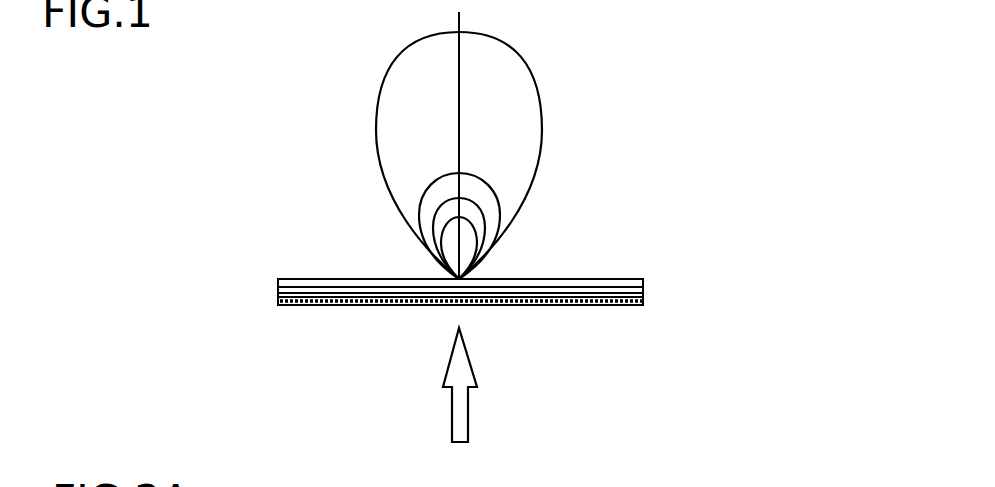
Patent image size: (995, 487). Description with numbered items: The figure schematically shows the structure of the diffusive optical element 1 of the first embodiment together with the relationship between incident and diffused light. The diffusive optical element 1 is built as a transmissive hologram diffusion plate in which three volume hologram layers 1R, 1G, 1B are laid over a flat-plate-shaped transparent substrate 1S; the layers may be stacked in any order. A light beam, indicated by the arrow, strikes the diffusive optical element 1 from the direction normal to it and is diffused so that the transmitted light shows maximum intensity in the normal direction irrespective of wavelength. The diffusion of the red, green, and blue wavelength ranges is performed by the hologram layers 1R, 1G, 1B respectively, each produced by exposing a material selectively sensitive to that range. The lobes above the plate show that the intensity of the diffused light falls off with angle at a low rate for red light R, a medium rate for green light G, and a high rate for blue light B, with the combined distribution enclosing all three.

The diffusive optical element 1 is at (451, 301).
The volume hologram layer for red 1R is at (277, 282).
The volume hologram layer for green 1G is at (278, 292).
The volume hologram layer for blue 1B is at (277, 298).
The transparent substrate 1S is at (296, 307).
The red wavelength range light R is at (500, 193).
The green wavelength range light G is at (488, 220).
The blue wavelength range light B is at (478, 237).